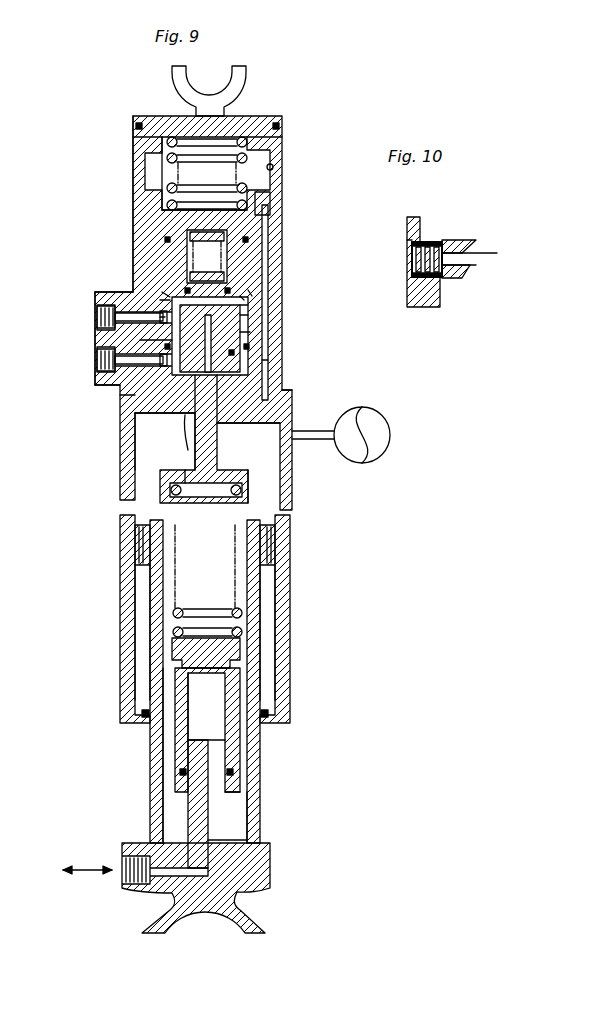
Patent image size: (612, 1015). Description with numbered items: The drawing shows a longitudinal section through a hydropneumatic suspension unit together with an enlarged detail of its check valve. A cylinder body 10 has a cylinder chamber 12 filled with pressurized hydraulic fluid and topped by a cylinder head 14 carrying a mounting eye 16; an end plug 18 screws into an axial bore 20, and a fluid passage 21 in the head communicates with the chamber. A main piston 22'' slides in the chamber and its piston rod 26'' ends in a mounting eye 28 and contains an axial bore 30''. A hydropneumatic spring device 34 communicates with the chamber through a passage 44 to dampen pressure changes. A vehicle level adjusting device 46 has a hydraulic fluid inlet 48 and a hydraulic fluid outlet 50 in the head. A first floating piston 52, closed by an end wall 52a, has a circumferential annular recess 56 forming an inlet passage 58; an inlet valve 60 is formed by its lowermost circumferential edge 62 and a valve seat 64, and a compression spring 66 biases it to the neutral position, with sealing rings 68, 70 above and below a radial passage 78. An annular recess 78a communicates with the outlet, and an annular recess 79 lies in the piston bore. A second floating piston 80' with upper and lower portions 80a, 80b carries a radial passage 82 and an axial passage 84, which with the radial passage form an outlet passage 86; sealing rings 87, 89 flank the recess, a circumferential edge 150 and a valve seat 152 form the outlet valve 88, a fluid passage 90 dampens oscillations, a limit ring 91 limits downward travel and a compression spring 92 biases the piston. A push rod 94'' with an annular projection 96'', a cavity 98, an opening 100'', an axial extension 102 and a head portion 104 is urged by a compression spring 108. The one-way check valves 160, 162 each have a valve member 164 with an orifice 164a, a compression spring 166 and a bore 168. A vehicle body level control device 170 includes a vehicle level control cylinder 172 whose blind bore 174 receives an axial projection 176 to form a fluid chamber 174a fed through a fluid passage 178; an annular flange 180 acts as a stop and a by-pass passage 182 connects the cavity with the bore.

In FIG. 9, the cylinder body 10 is at (120, 612).
In FIG. 9, the cylinder chamber 12 is at (281, 492).
In FIG. 9, the cylinder head 14 is at (130, 175).
In FIG. 10, the cylinder head 14 is at (409, 225).
In FIG. 9, the mounting eye 16 is at (244, 69).
In FIG. 9, the end plug 18 is at (236, 122).
In FIG. 9, the axial bore 20 is at (275, 167).
In FIG. 10, the fluid passage 21 is at (476, 259).
In FIG. 9, the main piston 22'' is at (112, 545).
In FIG. 9, the piston rod 26'' is at (111, 632).
In FIG. 9, the mounting eye 28 is at (254, 925).
In FIG. 9, the axial bore 30'' is at (278, 817).
In FIG. 9, the hydropneumatic spring device 34 is at (376, 422).
In FIG. 9, the passage 44 is at (294, 430).
In FIG. 9, the vehicle level adjusting device 46 is at (95, 344).
In FIG. 9, the hydraulic fluid inlet 48 is at (97, 362).
In FIG. 9, the hydraulic fluid outlet 50 is at (97, 316).
In FIG. 9, the first floating piston 52 is at (163, 208).
In FIG. 9, the end wall 52a is at (207, 173).
In FIG. 9, the circumferential annular recess 56 is at (97, 386).
In FIG. 9, the inlet passage 58 is at (160, 396).
In FIG. 9, the inlet valve 60 is at (150, 441).
In FIG. 9, the lowermost circumferential edge 62 is at (248, 431).
In FIG. 9, the valve seat 64 is at (160, 414).
In FIG. 9, the compression spring 66 is at (169, 137).
In FIG. 9, the sealing ring 68 is at (165, 236).
In FIG. 9, the sealing ring 70 is at (140, 340).
In FIG. 9, the radial passage 78 is at (132, 298).
In FIG. 9, the annular recess 78a is at (160, 300).
In FIG. 9, the annular recess 79 is at (162, 292).
In FIG. 9, the second floating piston 80' is at (241, 344).
In FIG. 9, the upper portion 80a is at (243, 297).
In FIG. 9, the lower portion 80b is at (250, 332).
In FIG. 9, the radial passage 82 is at (178, 266).
In FIG. 9, the axial passage 84 is at (241, 325).
In FIG. 9, the outlet passage 86 is at (160, 317).
In FIG. 9, the sealing ring 87 is at (250, 290).
In FIG. 9, the outlet valve 88 is at (172, 262).
In FIG. 9, the sealing ring 89 is at (245, 360).
In FIG. 9, the fluid passage 90 is at (250, 352).
In FIG. 9, the limit ring 91 is at (182, 432).
In FIG. 9, the compression spring 92 is at (228, 252).
In FIG. 9, the push rod 94'' is at (131, 469).
In FIG. 9, the annular projection 96'' is at (288, 632).
In FIG. 9, the cavity 98 is at (262, 540).
In FIG. 9, the opening 100'' is at (292, 483).
In FIG. 9, the axial extension 102 is at (216, 445).
In FIG. 9, the head portion 104 is at (284, 392).
In FIG. 9, the compression spring 108 is at (172, 490).
In FIG. 9, the circumferential edge 150 is at (250, 316).
In FIG. 9, the valve seat 152 is at (248, 304).
In FIG. 9, the one-way check valve 160 is at (270, 200).
In FIG. 10, the one-way check valve 160 is at (405, 240).
In FIG. 9, the one-way check valve 162 is at (262, 366).
In FIG. 10, the valve member 164 is at (455, 248).
In FIG. 10, the orifice 164a is at (463, 280).
In FIG. 10, the compression spring 166 is at (425, 280).
In FIG. 10, the bore 168 is at (430, 242).
In FIG. 9, the vehicle body level control device 170 is at (173, 792).
In FIG. 9, the vehicle level control cylinder 172 is at (160, 752).
In FIG. 9, the blind bore 174 is at (222, 727).
In FIG. 9, the fluid chamber 174a is at (209, 706).
In FIG. 9, the axial projection 176 is at (224, 798).
In FIG. 9, the fluid passage 178 is at (228, 837).
In FIG. 9, the annular flange 180 is at (241, 641).
In FIG. 9, the by-pass passage 182 is at (185, 608).